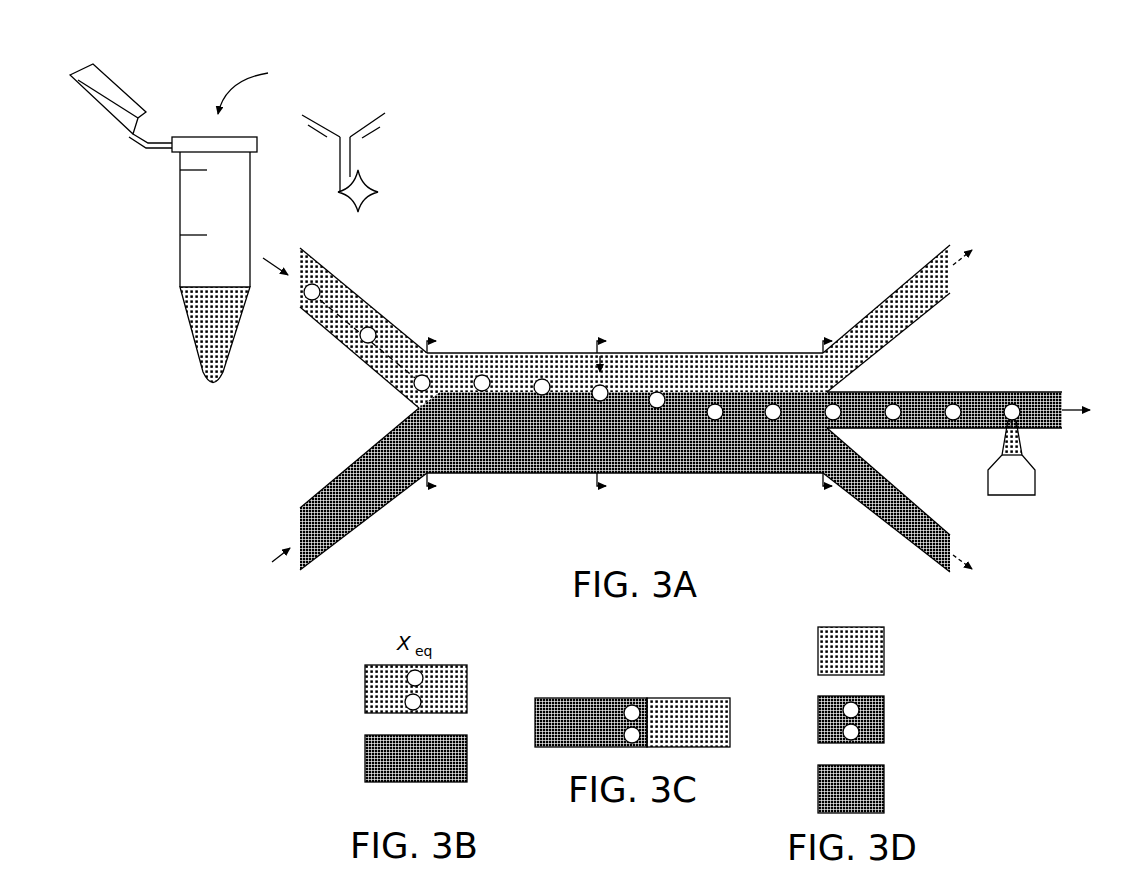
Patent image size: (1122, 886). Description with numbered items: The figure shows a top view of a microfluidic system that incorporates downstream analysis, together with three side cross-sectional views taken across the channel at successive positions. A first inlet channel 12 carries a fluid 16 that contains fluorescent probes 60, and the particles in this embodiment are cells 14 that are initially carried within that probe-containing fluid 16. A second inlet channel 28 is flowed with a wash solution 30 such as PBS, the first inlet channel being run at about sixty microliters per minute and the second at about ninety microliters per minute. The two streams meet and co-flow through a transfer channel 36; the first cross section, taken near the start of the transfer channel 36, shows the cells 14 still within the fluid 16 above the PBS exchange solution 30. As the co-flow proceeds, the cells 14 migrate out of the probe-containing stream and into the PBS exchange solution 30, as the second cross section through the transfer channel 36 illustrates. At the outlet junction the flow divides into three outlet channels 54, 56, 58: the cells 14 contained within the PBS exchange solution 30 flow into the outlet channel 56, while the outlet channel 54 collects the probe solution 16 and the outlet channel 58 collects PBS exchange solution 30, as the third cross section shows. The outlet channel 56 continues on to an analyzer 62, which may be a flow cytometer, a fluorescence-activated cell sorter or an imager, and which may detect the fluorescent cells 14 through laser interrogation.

In FIG. 3A, the first inlet channel 12 is at (330, 274).
In FIG. 3A, the cells 14 is at (366, 344).
In FIG. 3B, the cells 14 is at (407, 677).
In FIG. 3C, the cells 14 is at (629, 705).
In FIG. 3D, the cells 14 is at (844, 709).
In FIG. 3A, the fluid 16 is at (212, 323).
In FIG. 3B, the fluid 16 is at (446, 701).
In FIG. 3C, the fluid 16 is at (692, 712).
In FIG. 3D, the fluid 16 is at (832, 633).
In FIG. 3A, the second inlet channel 28 is at (335, 481).
In FIG. 3A, the wash solution 30 is at (510, 466).
In FIG. 3B, the wash solution 30 is at (382, 753).
In FIG. 3C, the wash solution 30 is at (565, 715).
In FIG. 3D, the wash solution 30 is at (873, 717).
In FIG. 3A, the transfer channel 36 is at (660, 475).
In FIG. 3A, the outlet channel 54 is at (916, 275).
In FIG. 3A, the outlet channel 56 is at (920, 429).
In FIG. 3A, the outlet channel 58 is at (895, 533).
In FIG. 3A, the fluorescent probes 60 is at (369, 155).
In FIG. 3A, the analyzer 62 is at (1008, 488).